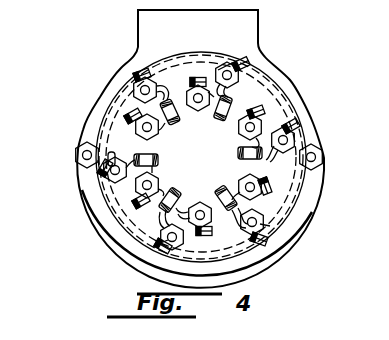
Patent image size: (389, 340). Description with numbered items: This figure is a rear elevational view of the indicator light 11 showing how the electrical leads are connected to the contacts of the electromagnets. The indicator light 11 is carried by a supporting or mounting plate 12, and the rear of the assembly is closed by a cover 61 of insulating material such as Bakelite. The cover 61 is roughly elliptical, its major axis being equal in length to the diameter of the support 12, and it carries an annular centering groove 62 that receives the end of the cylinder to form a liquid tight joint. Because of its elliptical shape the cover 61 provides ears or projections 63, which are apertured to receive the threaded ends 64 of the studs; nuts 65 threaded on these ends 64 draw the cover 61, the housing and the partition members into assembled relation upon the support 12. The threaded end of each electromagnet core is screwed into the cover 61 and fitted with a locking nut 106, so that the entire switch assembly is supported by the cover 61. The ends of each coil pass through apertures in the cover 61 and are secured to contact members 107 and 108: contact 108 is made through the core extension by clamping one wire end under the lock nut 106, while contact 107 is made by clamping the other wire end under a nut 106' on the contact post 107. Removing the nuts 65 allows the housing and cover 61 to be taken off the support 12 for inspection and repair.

The indicator light 11 is at (294, 66).
The supporting or mounting plate 12 is at (150, 25).
The cover 61 is at (302, 117).
The annular centering groove 62 is at (282, 92).
The ears or projections 63 is at (306, 182).
The threaded ends 64 is at (80, 156).
The nuts 65 is at (98, 167).
The locking nut 106 is at (193, 164).
The nut 106' is at (215, 148).
The contact member 107 is at (226, 57).
The contact member 108 is at (243, 128).